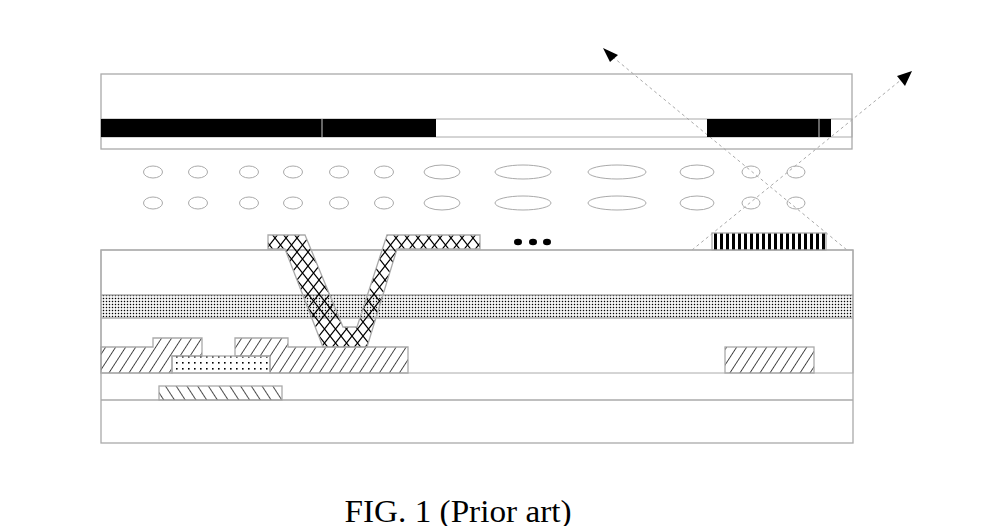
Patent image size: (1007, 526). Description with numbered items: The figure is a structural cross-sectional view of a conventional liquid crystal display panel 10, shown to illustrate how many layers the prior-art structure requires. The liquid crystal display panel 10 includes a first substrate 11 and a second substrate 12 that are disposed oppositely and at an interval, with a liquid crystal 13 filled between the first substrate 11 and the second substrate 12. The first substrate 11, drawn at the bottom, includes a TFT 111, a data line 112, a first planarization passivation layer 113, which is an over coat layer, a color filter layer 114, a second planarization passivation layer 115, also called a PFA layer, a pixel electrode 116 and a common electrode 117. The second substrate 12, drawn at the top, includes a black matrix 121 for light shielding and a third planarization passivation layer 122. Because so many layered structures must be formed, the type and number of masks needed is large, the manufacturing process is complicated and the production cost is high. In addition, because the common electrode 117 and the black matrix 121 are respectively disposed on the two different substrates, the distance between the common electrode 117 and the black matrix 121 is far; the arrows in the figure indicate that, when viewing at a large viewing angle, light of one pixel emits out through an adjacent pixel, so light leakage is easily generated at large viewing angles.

The liquid crystal display panel 10 is at (491, 40).
The first substrate 11 is at (872, 346).
The second substrate 12 is at (80, 159).
The liquid crystal 13 is at (152, 205).
The TFT 111 is at (135, 386).
The data line 112 is at (762, 363).
The first planarization passivation layer 113 is at (477, 345).
The color filter layer 114 is at (120, 308).
The second planarization passivation layer 115 is at (477, 272).
The pixel electrode 116 is at (315, 272).
The common electrode 117 is at (797, 243).
The black matrix 121 is at (100, 128).
The third planarization passivation layer 122 is at (476, 131).